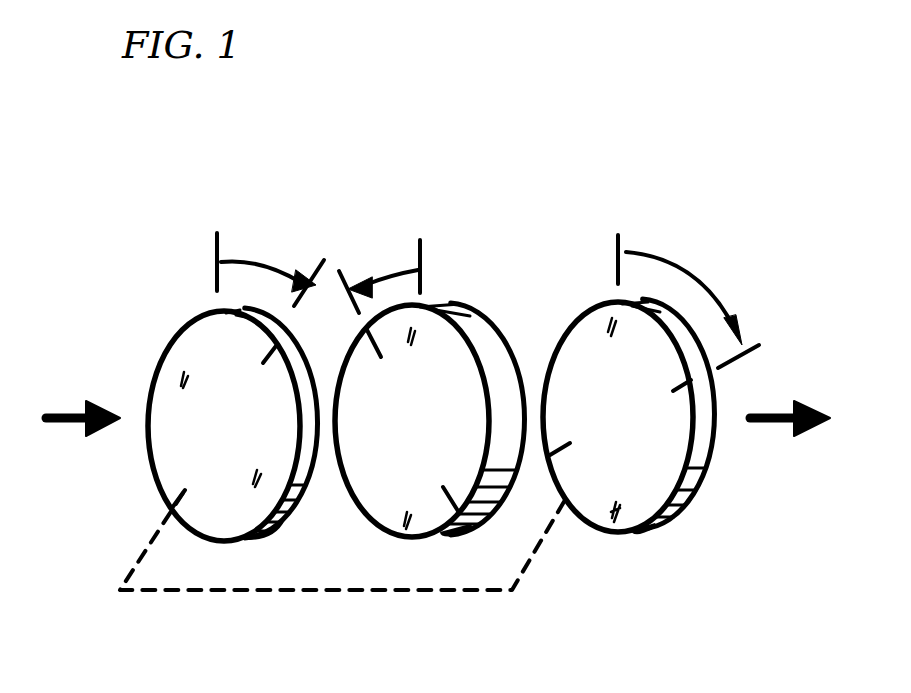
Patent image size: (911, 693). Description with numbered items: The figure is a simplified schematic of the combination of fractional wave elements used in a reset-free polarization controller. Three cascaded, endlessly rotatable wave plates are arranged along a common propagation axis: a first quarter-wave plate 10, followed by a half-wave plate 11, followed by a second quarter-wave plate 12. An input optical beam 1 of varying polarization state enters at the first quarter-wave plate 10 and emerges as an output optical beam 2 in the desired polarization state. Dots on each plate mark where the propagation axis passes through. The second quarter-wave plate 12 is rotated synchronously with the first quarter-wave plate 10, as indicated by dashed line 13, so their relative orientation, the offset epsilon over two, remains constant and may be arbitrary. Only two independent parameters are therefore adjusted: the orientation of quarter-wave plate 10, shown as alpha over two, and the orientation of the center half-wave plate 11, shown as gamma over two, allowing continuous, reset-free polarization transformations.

The input optical beam 1 is at (70, 413).
The output optical beam 2 is at (783, 413).
The first quarter-wave plate 10 is at (178, 328).
The half-wave plate 11 is at (456, 305).
The second quarter-wave plate 12 is at (583, 310).
The dashed line 13 is at (120, 592).